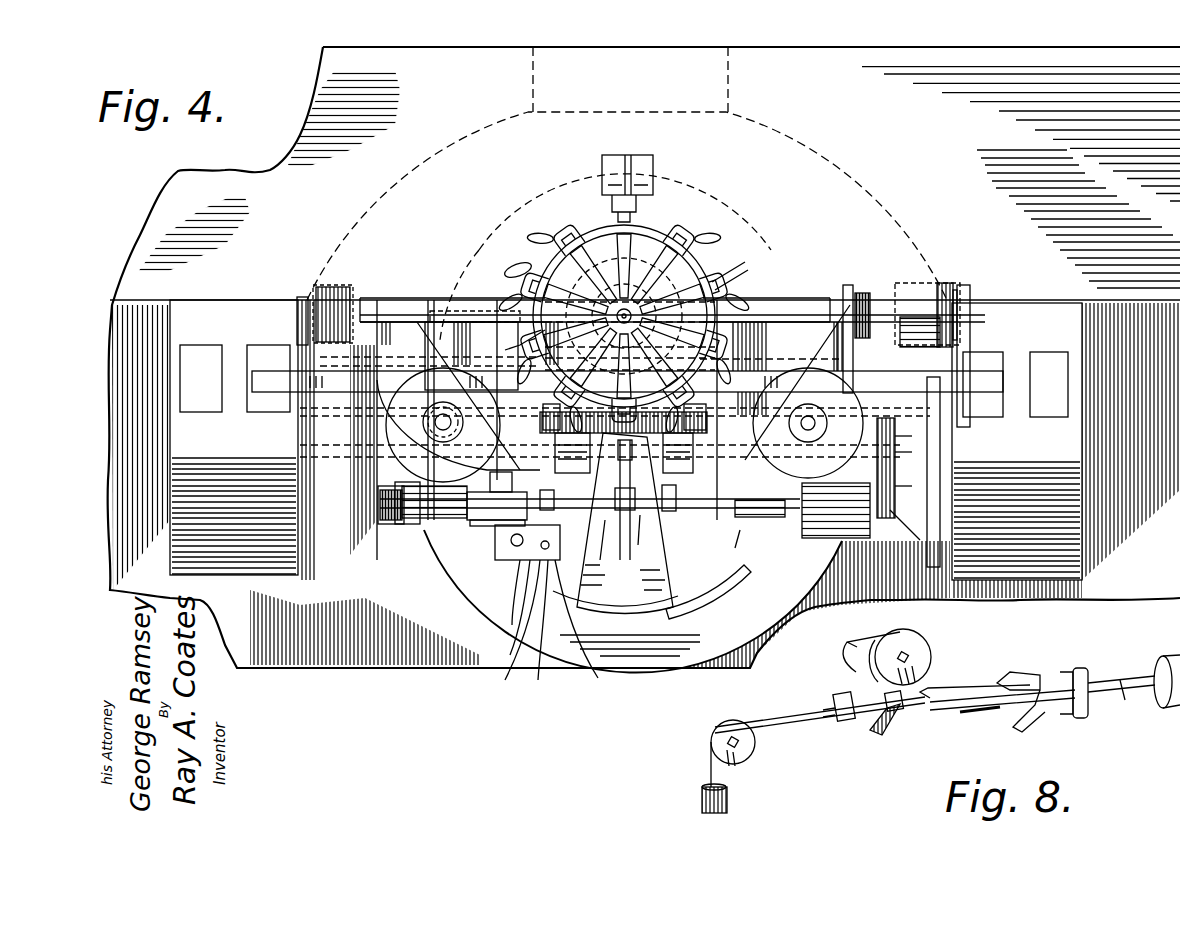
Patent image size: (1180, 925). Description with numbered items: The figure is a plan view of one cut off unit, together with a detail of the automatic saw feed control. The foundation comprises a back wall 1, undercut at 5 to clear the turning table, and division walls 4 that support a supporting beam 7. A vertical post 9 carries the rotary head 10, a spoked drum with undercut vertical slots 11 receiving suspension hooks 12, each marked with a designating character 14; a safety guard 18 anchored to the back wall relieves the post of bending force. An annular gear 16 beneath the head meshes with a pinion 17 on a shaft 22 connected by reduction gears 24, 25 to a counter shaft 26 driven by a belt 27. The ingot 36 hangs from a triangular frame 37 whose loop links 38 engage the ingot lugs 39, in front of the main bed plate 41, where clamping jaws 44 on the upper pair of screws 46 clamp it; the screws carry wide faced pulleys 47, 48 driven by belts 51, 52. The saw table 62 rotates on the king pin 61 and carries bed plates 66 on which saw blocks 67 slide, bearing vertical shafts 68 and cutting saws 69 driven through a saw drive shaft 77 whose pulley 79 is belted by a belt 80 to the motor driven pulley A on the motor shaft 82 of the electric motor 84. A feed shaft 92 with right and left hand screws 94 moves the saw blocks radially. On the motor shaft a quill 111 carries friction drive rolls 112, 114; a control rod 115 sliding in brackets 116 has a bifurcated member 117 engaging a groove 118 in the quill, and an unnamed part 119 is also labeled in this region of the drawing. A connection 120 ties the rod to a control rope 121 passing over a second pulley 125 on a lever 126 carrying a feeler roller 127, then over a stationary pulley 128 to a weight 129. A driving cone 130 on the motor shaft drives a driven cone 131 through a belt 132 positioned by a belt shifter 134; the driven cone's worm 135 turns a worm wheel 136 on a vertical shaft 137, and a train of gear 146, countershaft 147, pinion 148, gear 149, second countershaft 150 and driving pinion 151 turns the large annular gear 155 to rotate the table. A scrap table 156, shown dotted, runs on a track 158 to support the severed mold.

In FIG. 4, the back wall 1 is at (323, 85).
In FIG. 4, the division walls 4 is at (646, 449).
In FIG. 4, the under-cut 5 is at (455, 140).
In FIG. 4, the supporting beam 7 is at (627, 382).
In FIG. 4, the vertical post 9 is at (580, 262).
In FIG. 4, the rotary head 10 is at (582, 250).
In FIG. 4, the under-cut vertical slots 11 is at (705, 258).
In FIG. 4, the suspension hooks 12 is at (515, 276).
In FIG. 4, the designating character 14 is at (470, 356).
In FIG. 4, the annular gear 16 is at (741, 267).
In FIG. 4, the pinion 17 is at (800, 318).
In FIG. 4, the safety guard 18 is at (655, 213).
In FIG. 4, the shaft 22 is at (843, 310).
In FIG. 4, the reduction gear 24 is at (862, 293).
In FIG. 4, the reduction gear 25 is at (895, 290).
In FIG. 4, the counter shaft 26 is at (935, 300).
In FIG. 4, the belt 27 is at (962, 285).
In FIG. 4, the ingot 36 is at (660, 535).
In FIG. 4, the triangular frame 37 is at (623, 434).
In FIG. 4, the loop links 38 is at (557, 438).
In FIG. 4, the ingot lugs 39 is at (694, 432).
In FIG. 4, the main bed plate 41 is at (455, 307).
In FIG. 4, the clamping jaws 44 is at (615, 430).
In FIG. 4, the upper pair of screws 46 is at (1021, 177).
In FIG. 4, the wide faced pulley 47 is at (920, 340).
In FIG. 4, the wide faced pulley 48 is at (333, 325).
In FIG. 4, the belt 51 is at (303, 297).
In FIG. 4, the belt 52 is at (350, 305).
In FIG. 4, the king pin 61 is at (385, 430).
In FIG. 4, the saw table 62 is at (687, 601).
In FIG. 4, the bed plates 66 is at (580, 429).
In FIG. 4, the saw blocks 67 is at (931, 472).
In FIG. 4, the vertical shafts 68 is at (423, 422).
In FIG. 4, the cutting saws 69 is at (386, 410).
In FIG. 4, the saw drive shaft 77 is at (917, 450).
In FIG. 4, the pulley 79 is at (916, 433).
In FIG. 4, the belt 80 is at (916, 483).
In FIG. 4, the motor shaft 82 is at (600, 482).
In FIG. 8, the motor shaft 82 is at (978, 715).
In FIG. 4, the electric motor 84 is at (836, 510).
In FIG. 4, the shaft 92 is at (365, 470).
In FIG. 4, the right and left hand screws 94 is at (884, 420).
In FIG. 4, the quill 111 is at (645, 542).
In FIG. 8, the quill 111 is at (1128, 705).
In FIG. 4, the friction drive roll 112 is at (620, 515).
In FIG. 8, the friction drive roll 112 is at (1158, 674).
In FIG. 4, the friction drive roll 114 is at (682, 494).
In FIG. 8, the control rod 115 is at (932, 692).
In FIG. 8, the brackets 116 is at (890, 732).
In FIG. 8, the bifurcated member 117 is at (1002, 710).
In FIG. 4, the groove 118 is at (628, 465).
In FIG. 8, the groove 118 is at (1078, 718).
In FIG. 4, the base 119 is at (365, 627).
In FIG. 8, the connection 120 is at (845, 722).
In FIG. 8, the control rope 121 is at (835, 676).
In FIG. 8, the second pulley 125 is at (920, 655).
In FIG. 4, the lever 126 is at (372, 501).
In FIG. 4, the feeler roller 127 is at (510, 480).
In FIG. 8, the stationary pulley 128 is at (756, 742).
In FIG. 8, the weight 129 is at (727, 800).
In FIG. 4, the driving cone 130 is at (480, 520).
In FIG. 4, the driven cone 131 is at (418, 525).
In FIG. 4, the belt 132 is at (385, 525).
In FIG. 4, the belt shifter 134 is at (410, 520).
In FIG. 4, the worm 135 is at (542, 492).
In FIG. 4, the worm wheel 136 is at (490, 528).
In FIG. 4, the vertical shaft 137 is at (608, 546).
In FIG. 4, the gear 146 is at (505, 612).
In FIG. 4, the countershaft 147 is at (513, 595).
In FIG. 4, the pinion 148 is at (510, 560).
In FIG. 4, the gear 149 is at (542, 630).
In FIG. 4, the second countershaft 150 is at (592, 628).
In FIG. 4, the driving pinion 151 is at (510, 630).
In FIG. 4, the large annular gear 155 is at (742, 547).
In FIG. 4, the scrap table 156 is at (668, 572).
In FIG. 4, the track 158 is at (520, 235).
In FIG. 4, the motor driven pulley A is at (915, 531).